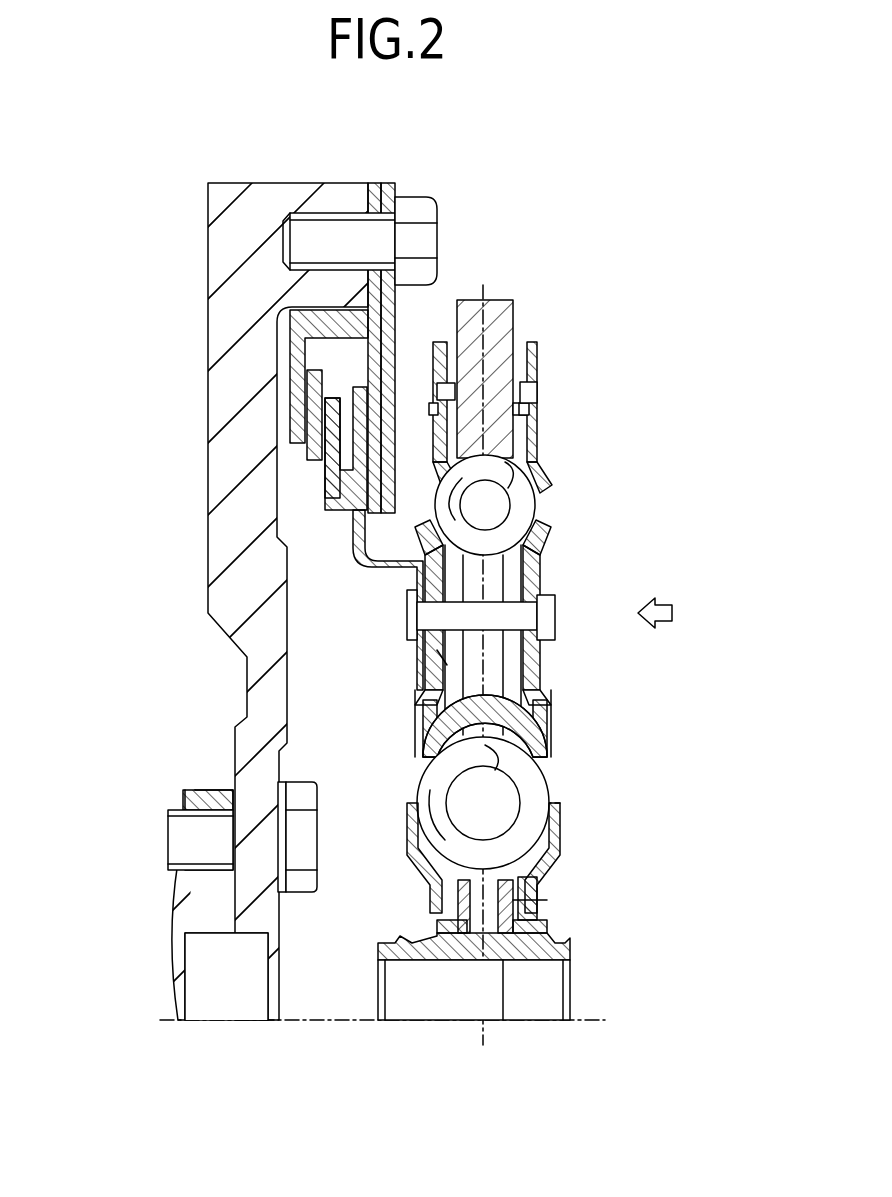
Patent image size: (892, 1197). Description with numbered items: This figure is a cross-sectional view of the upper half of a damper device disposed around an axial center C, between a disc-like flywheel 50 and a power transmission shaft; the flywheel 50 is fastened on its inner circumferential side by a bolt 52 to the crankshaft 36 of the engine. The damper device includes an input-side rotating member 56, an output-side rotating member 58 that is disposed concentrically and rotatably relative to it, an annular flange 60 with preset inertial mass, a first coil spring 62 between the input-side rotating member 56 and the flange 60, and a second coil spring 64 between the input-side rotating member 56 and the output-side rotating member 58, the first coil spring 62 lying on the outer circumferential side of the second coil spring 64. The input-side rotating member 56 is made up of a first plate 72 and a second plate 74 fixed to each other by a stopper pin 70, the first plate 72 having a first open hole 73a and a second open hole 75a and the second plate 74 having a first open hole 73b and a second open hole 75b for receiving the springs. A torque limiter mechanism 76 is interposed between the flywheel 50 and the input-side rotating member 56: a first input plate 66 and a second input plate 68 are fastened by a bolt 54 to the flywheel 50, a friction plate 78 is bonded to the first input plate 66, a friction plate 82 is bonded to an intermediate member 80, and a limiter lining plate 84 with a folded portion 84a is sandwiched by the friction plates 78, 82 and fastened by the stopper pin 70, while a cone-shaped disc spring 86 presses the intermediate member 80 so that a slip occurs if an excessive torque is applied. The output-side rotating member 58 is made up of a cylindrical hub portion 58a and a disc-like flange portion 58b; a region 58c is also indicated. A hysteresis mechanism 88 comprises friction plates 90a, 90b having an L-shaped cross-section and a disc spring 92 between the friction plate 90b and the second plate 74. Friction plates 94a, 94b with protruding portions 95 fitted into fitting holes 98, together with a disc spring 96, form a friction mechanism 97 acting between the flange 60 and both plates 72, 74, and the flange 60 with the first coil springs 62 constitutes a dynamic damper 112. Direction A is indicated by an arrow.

The crankshaft 36 is at (212, 905).
The flywheel 50 is at (222, 322).
The bolt 52 is at (198, 832).
The bolt 54 is at (332, 232).
The input-side rotating member 56 is at (360, 600).
The output-side rotating member 58 is at (544, 976).
The hub portion 58a is at (430, 955).
The flange portion 58b is at (520, 900).
The holder wall 58c is at (430, 840).
The flange 60 is at (505, 330).
The first coil spring 62 is at (520, 517).
The second coil spring 64 is at (530, 793).
The first input plate 66 is at (385, 345).
The second input plate 68 is at (297, 378).
The stopper pin 70 is at (520, 614).
The first plate 72 is at (430, 662).
The first open hole 73a is at (440, 520).
The first open hole 73b is at (540, 520).
The second plate 74 is at (502, 609).
The second open hole 75a is at (430, 710).
The second open hole 75b is at (540, 708).
The torque limiter mechanism 76 is at (300, 466).
The friction plate 78 is at (365, 525).
The intermediate member 80 is at (330, 490).
The friction plate 82 is at (345, 512).
The limiter lining plate 84 is at (350, 545).
The folded portion 84a is at (395, 567).
The disc spring 86 is at (313, 415).
The hysteresis mechanism 88 is at (437, 896).
The friction plate 90a is at (452, 927).
The friction plate 90b is at (540, 927).
The disc spring 92 is at (535, 890).
The friction plate 94a is at (440, 380).
The friction plate 94b is at (540, 430).
The protruding portion 95 is at (432, 407).
The disc spring 96 is at (535, 392).
The friction mechanism 97 is at (505, 400).
The fitting hole 98 is at (433, 410).
The dynamic damper 112 is at (640, 400).
The direction A is at (667, 613).
The axial center C is at (200, 1025).